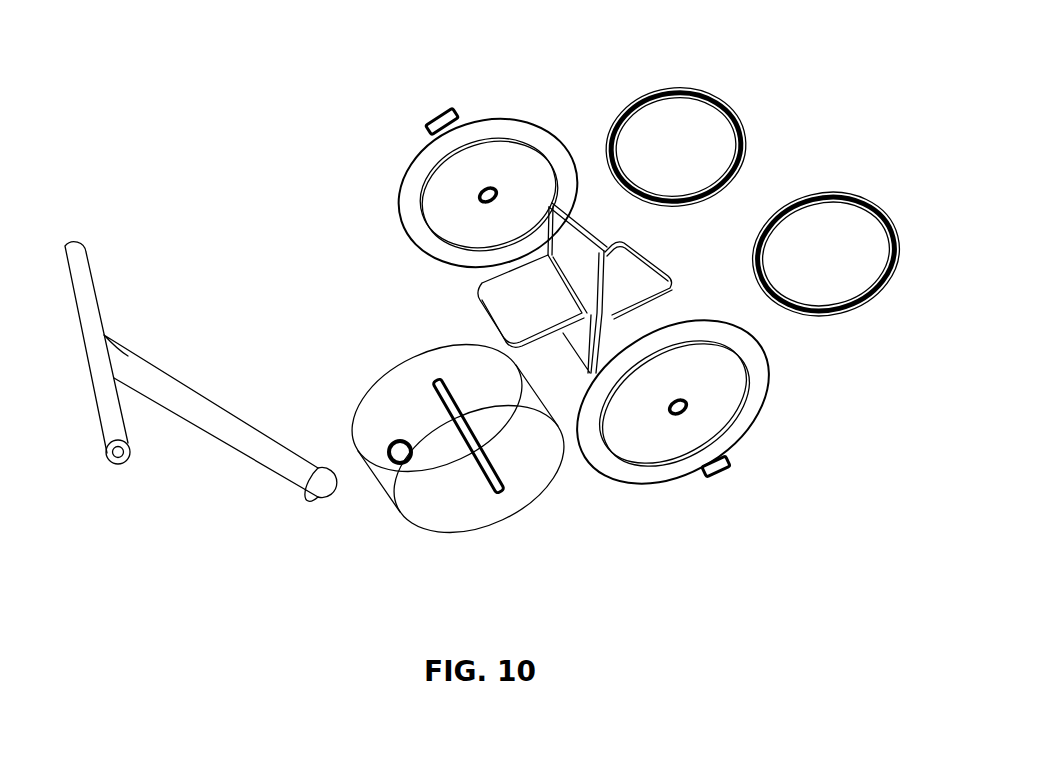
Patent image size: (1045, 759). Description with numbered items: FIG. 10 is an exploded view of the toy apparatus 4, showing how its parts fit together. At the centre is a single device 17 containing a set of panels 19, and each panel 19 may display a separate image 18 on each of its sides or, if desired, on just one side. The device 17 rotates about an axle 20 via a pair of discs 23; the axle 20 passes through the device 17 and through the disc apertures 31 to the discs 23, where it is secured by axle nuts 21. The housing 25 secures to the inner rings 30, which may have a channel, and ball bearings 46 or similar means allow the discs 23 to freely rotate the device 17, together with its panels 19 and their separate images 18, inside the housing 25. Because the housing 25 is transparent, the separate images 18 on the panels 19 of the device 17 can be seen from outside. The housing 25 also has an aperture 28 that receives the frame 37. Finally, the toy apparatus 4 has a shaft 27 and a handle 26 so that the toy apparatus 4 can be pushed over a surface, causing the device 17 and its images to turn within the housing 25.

The toy apparatus 4 is at (170, 100).
The device 17 is at (275, 133).
The separate image 18 is at (587, 272).
The panel 19 is at (570, 222).
The axle 20 is at (480, 472).
The axle nut 21 is at (433, 120).
The disc 23 is at (438, 200).
The housing 25 is at (518, 452).
The handle 26 is at (78, 272).
The shaft 27 is at (200, 400).
The aperture 28 is at (393, 463).
The inner ring 30 is at (746, 147).
The disc aperture 31 is at (492, 192).
The frame 37 is at (329, 480).
The ball bearing 46 is at (850, 193).